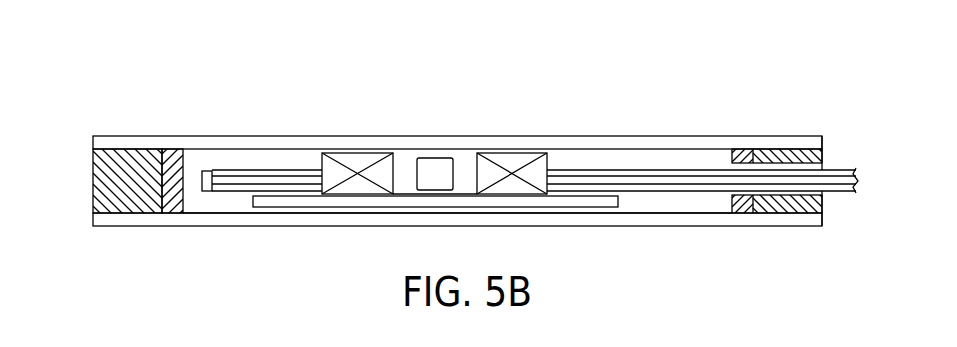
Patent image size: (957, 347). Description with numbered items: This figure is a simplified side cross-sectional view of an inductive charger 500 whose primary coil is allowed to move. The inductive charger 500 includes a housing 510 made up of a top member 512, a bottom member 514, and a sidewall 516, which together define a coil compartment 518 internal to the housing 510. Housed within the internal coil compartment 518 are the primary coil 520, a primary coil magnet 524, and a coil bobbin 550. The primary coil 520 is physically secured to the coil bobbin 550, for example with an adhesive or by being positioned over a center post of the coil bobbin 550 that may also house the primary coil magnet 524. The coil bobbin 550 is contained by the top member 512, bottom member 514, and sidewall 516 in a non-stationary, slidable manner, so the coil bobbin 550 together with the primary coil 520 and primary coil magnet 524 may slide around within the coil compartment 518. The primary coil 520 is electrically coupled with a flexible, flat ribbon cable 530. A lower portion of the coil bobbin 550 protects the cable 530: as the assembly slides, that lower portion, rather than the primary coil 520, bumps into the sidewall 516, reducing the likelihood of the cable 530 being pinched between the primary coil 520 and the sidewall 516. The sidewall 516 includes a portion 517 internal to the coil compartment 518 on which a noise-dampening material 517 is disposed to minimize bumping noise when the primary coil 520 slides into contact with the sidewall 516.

The inductive charger 500 is at (740, 78).
The housing 510 is at (92, 168).
The top member 512 is at (814, 135).
The bottom member 514 is at (812, 227).
The sidewall 516 is at (815, 154).
The noise-dampening material 517 is at (171, 195).
The coil compartment 518 is at (693, 203).
The primary coil 520 is at (507, 158).
The primary coil magnet 524 is at (425, 157).
The flexible, flat ribbon cable 530 is at (231, 193).
The coil bobbin 550 is at (313, 207).